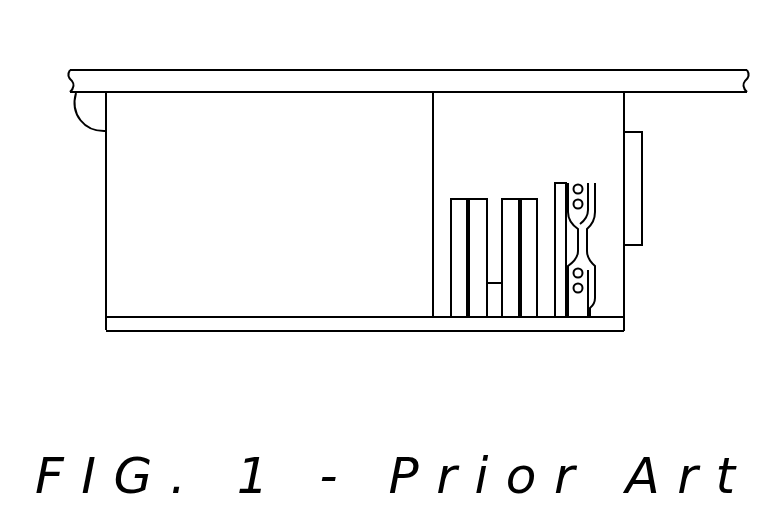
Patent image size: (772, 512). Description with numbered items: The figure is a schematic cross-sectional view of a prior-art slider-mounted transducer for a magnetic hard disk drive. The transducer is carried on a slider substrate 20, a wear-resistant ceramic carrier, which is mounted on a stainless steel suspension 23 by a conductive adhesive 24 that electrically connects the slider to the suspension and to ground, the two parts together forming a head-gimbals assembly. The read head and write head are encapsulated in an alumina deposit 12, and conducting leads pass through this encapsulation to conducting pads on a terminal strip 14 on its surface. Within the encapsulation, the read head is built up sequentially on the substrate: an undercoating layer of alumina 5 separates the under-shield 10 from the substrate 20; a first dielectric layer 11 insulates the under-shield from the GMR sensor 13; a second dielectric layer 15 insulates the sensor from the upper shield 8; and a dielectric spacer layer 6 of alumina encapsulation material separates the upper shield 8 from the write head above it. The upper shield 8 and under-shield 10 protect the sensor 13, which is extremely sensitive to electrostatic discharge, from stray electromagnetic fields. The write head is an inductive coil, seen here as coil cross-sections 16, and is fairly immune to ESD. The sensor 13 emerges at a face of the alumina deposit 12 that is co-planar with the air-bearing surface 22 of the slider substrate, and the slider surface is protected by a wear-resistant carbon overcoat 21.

The undercoating layer of alumina 5 is at (440, 308).
The dielectric spacer layer 6 is at (530, 308).
The upper shield 8 is at (563, 308).
The under-shield 10 is at (458, 308).
The first dielectric layer 11 is at (473, 308).
The alumina deposit 12 is at (512, 110).
The sensor 13 is at (493, 309).
The terminal strip 14 is at (631, 192).
The second dielectric layer 15 is at (509, 308).
The coil cross-sections 16 is at (583, 277).
The slider substrate 20 is at (241, 110).
The carbon overcoat 21 is at (118, 323).
The air-bearing surface 22 is at (210, 332).
The stainless steel suspension 23 is at (338, 80).
The conductive adhesive 24 is at (90, 106).